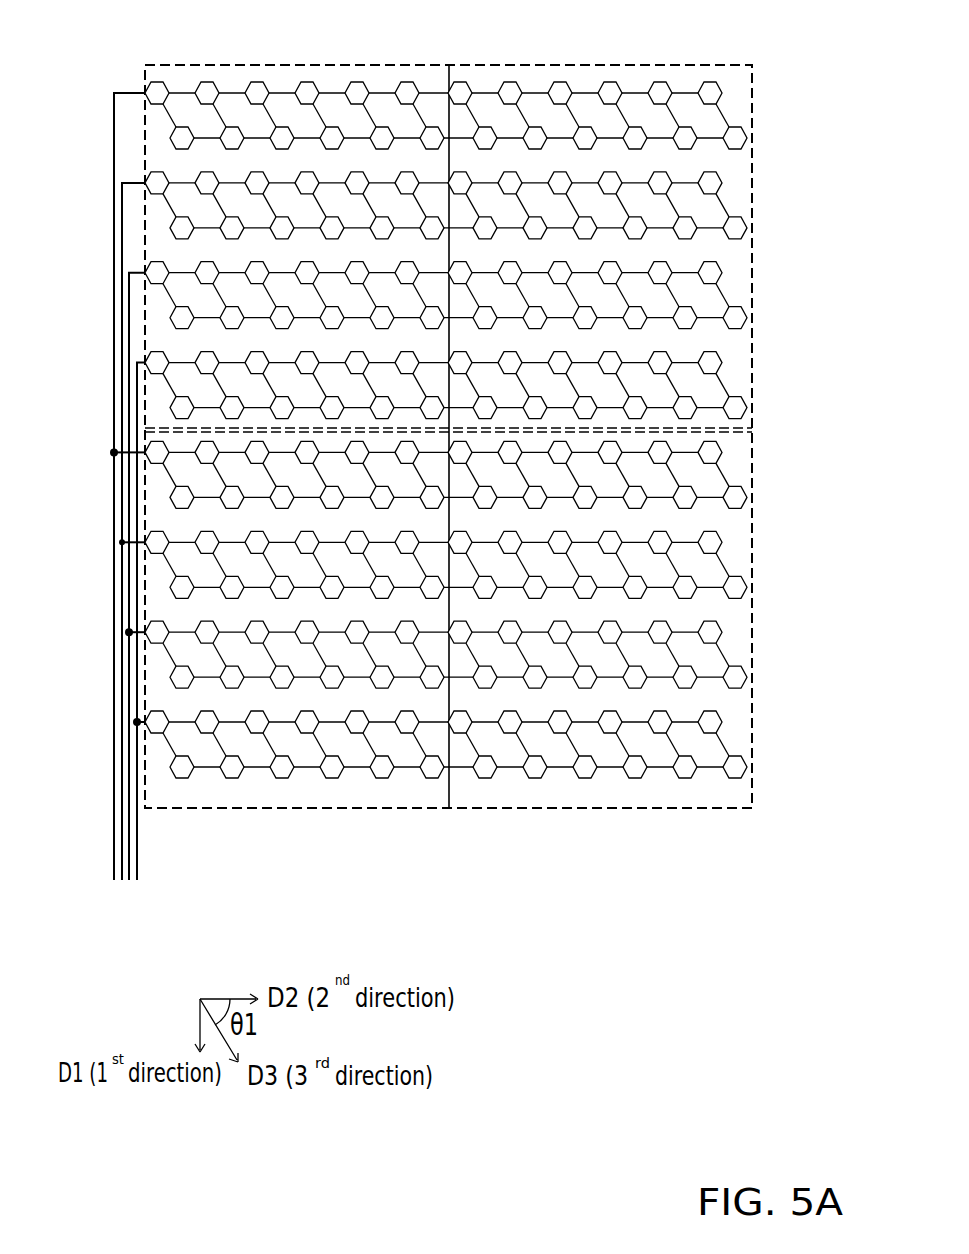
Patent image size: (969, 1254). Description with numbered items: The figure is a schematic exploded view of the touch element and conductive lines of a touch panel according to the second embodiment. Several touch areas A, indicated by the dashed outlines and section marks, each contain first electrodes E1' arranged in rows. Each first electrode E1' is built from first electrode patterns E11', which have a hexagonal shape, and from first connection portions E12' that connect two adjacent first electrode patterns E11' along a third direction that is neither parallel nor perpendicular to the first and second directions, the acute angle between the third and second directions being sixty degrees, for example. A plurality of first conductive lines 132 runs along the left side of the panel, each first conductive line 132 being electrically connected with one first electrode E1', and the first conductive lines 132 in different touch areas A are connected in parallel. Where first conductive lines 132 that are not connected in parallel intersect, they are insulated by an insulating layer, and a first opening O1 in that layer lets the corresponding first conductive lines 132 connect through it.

The touch area A is at (142, 83).
The first electrode E1' is at (500, 392).
The first electrode pattern E11' is at (446, 78).
The first connection portion E12' is at (446, 72).
The first opening O1 is at (112, 549).
The first conductive line 132 is at (137, 887).